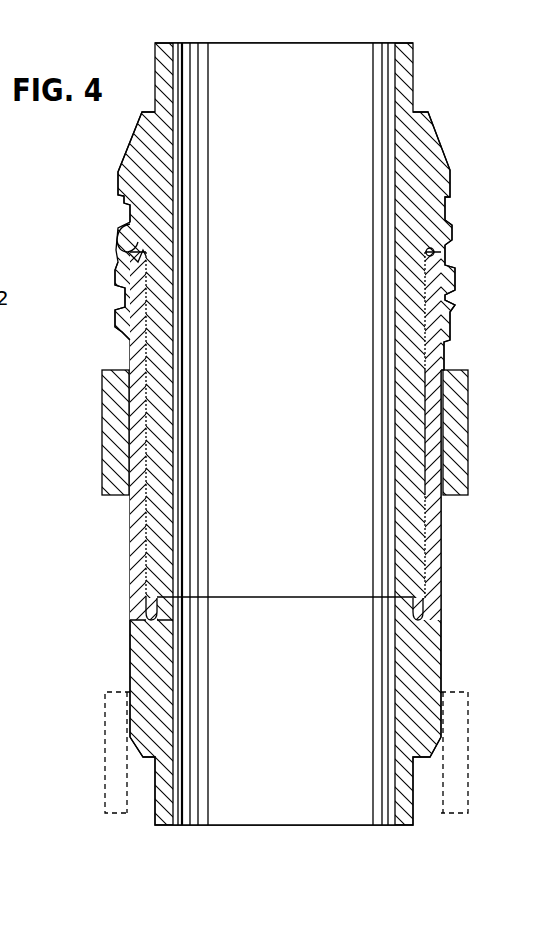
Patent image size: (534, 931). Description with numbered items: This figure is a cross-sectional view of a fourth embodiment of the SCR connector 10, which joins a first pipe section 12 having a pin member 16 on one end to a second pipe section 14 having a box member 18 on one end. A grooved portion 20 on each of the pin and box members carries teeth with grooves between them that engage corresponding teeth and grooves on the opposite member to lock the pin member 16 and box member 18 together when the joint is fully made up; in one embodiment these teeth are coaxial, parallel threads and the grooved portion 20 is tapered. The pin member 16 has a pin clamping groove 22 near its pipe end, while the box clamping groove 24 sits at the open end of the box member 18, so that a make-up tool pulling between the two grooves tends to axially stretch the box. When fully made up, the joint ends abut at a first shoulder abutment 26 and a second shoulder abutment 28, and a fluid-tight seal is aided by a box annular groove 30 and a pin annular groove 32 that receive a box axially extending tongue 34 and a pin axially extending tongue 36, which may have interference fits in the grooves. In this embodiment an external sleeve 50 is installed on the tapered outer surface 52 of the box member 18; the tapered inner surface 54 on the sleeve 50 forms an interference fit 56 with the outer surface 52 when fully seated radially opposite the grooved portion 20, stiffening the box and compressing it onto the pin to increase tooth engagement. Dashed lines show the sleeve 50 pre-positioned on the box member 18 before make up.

The SCR connector 10 is at (456, 79).
The first pipe section 12 is at (410, 100).
The second pipe section 14 is at (155, 792).
The pin member 16 is at (412, 345).
The box member 18 is at (442, 412).
The grooved portion 20 is at (427, 446).
The pin clamping groove 22 is at (452, 218).
The box clamping groove 24 is at (458, 300).
The first shoulder abutment 26 is at (434, 253).
The second shoulder abutment 28 is at (160, 588).
The box annular groove 30 is at (140, 628).
The pin annular groove 32 is at (128, 228).
The box axially extending tongue 34 is at (130, 258).
The pin axially extending tongue 36 is at (417, 608).
The external sleeve 50 is at (456, 478).
The tapered outer surface on box 52 is at (441, 545).
The tapered inner surface on sleeve 54 is at (437, 762).
The interference fit 56 is at (108, 436).